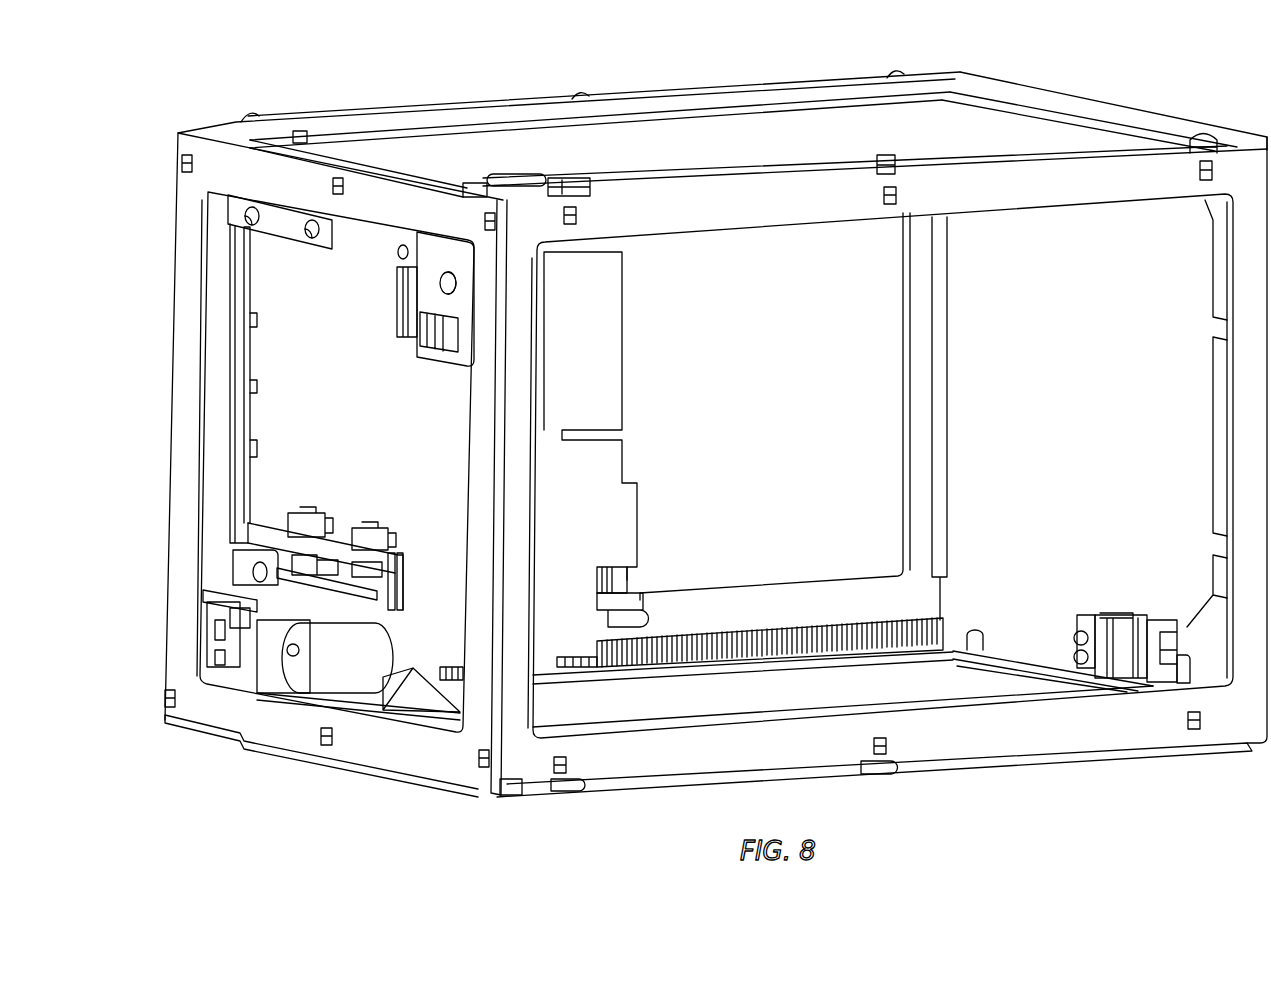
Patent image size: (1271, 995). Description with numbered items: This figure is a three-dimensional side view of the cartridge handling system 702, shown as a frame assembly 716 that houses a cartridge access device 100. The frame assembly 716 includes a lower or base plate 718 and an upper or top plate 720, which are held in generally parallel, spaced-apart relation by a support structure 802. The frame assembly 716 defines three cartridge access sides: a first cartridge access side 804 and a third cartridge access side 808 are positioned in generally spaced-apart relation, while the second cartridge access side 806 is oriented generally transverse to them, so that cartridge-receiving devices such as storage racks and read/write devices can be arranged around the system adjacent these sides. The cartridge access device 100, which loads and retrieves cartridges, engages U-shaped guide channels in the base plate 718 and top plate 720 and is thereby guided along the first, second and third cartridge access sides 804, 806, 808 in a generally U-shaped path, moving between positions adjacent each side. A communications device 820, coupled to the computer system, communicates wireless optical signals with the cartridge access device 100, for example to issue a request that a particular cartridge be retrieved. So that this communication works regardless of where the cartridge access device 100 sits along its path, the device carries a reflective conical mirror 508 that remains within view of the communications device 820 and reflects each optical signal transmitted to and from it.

The cartridge handling system 702 is at (1090, 44).
The frame assembly 716 is at (1147, 107).
The top plate 720 is at (628, 96).
The cartridge access device 100 is at (624, 327).
The support structure 802 is at (472, 441).
The first cartridge access side 804 is at (1013, 747).
The second cartridge access side 806 is at (352, 753).
The third cartridge access side 808 is at (731, 581).
The base plate 718 is at (997, 652).
The communications device 820 is at (1073, 630).
The conical mirror 508 is at (424, 669).